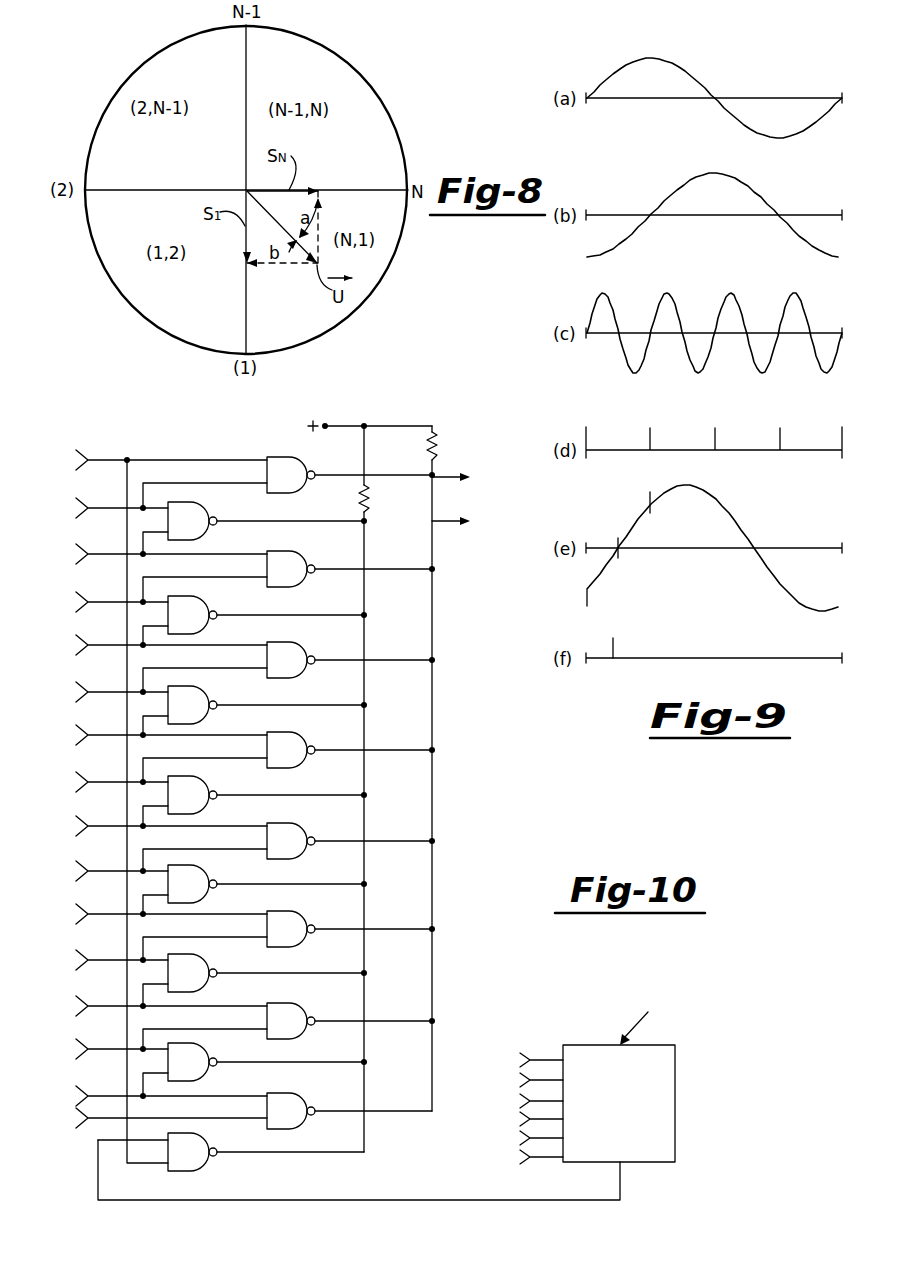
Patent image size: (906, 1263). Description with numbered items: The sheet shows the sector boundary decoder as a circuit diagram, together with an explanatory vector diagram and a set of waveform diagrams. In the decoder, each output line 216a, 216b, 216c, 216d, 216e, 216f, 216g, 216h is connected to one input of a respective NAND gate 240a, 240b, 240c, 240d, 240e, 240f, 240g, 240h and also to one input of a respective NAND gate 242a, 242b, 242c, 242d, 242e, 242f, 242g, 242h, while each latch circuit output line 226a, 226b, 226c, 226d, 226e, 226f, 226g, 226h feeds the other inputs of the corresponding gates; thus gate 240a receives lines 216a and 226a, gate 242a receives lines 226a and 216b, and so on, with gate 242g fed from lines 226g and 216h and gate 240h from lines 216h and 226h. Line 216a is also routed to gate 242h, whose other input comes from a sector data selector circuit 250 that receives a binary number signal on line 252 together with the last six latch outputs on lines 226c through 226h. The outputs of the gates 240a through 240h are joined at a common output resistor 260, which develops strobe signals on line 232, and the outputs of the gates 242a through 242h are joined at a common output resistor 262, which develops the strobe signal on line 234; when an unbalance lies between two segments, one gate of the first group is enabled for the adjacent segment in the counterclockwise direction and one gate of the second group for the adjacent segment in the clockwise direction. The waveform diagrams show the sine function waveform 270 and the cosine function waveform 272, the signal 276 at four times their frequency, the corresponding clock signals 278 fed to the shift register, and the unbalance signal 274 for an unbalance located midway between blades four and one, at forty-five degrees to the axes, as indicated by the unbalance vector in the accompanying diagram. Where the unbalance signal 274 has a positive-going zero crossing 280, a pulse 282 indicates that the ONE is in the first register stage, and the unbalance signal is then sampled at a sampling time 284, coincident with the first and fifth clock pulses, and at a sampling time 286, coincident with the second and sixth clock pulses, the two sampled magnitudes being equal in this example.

In FIG. 10, the output line 216a is at (82, 457).
In FIG. 10, the output line 216b is at (82, 551).
In FIG. 10, the output line 216c is at (82, 642).
In FIG. 10, the output line 216d is at (82, 732).
In FIG. 10, the output line 216e is at (82, 823).
In FIG. 10, the output line 216f is at (82, 911).
In FIG. 10, the output line 216g is at (82, 1003).
In FIG. 10, the output line 216h is at (82, 1093).
In FIG. 10, the latch circuit output line 226a is at (110, 505).
In FIG. 10, the latch circuit output line 226b is at (102, 599).
In FIG. 10, the latch circuit output line 226c is at (100, 689).
In FIG. 10, the latch circuit output line 226d is at (100, 779).
In FIG. 10, the latch circuit output line 226e is at (100, 868).
In FIG. 10, the latch circuit output line 226f is at (98, 957).
In FIG. 10, the latch circuit output line 226g is at (98, 1046).
In FIG. 10, the latch circuit output line 226h is at (83, 1124).
In FIG. 10, the NAND gate 240a is at (298, 457).
In FIG. 10, the NAND gate 240b is at (298, 551).
In FIG. 10, the NAND gate 240c is at (298, 642).
In FIG. 10, the NAND gate 240d is at (298, 732).
In FIG. 10, the NAND gate 240e is at (298, 823).
In FIG. 10, the NAND gate 240f is at (298, 911).
In FIG. 10, the NAND gate 240g is at (298, 1003).
In FIG. 10, the NAND gate 240h is at (298, 1093).
In FIG. 10, the NAND gate 242a is at (203, 502).
In FIG. 10, the NAND gate 242b is at (203, 596).
In FIG. 10, the NAND gate 242c is at (203, 686).
In FIG. 10, the NAND gate 242d is at (203, 776).
In FIG. 10, the NAND gate 242e is at (203, 865).
In FIG. 10, the NAND gate 242f is at (203, 954).
In FIG. 10, the NAND gate 242g is at (203, 1043).
In FIG. 10, the NAND gate 242h is at (203, 1133).
In FIG. 10, the common output resistor 260 is at (438, 440).
In FIG. 10, the common output resistor 262 is at (369, 497).
In FIG. 10, the line 232 is at (447, 482).
In FIG. 10, the line 234 is at (447, 526).
In FIG. 10, the sector data selector circuit 250 is at (676, 1090).
In FIG. 10, the line 252 is at (660, 1022).
In FIG. 9, the waveform 270 is at (705, 80).
In FIG. 9, the waveform 272 is at (754, 191).
In FIG. 9, the unbalance signal 274 is at (741, 522).
In FIG. 9, the signal 276 is at (606, 297).
In FIG. 9, the clock signals 278 is at (588, 430).
In FIG. 9, the zero crossing 280 is at (621, 557).
In FIG. 9, the pulse 282 is at (618, 640).
In FIG. 9, the sampling time 284 is at (590, 598).
In FIG. 9, the sampling time 286 is at (648, 501).